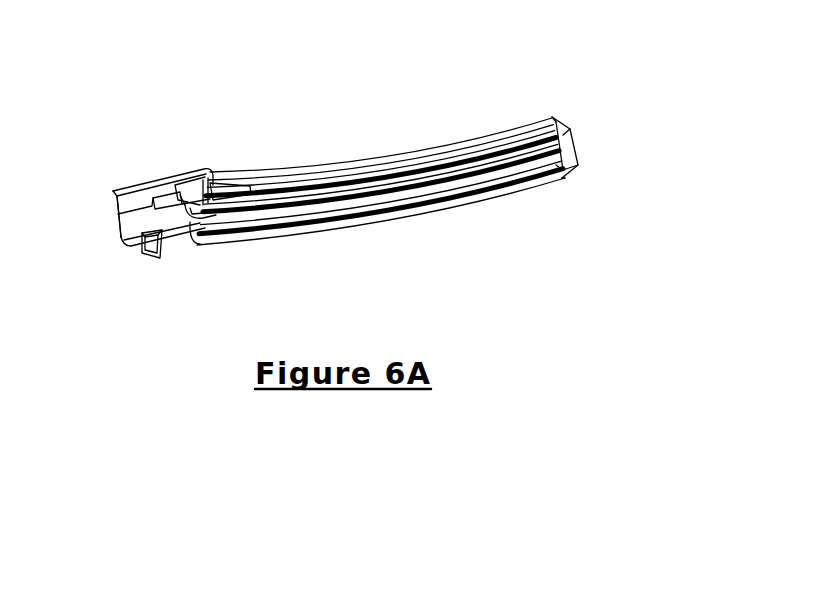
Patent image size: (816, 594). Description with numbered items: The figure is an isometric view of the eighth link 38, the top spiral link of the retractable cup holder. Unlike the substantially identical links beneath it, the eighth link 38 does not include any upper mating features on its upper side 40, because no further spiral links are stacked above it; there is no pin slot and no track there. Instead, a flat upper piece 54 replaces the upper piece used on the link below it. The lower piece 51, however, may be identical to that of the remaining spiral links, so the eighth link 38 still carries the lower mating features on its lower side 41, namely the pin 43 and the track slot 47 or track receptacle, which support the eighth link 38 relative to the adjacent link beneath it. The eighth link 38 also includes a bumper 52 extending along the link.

The eighth link 38 is at (413, 104).
The upper side 40 is at (553, 121).
The lower side 41 is at (552, 180).
The pin 43 is at (152, 262).
The track slot 47 is at (188, 226).
The lower piece 51 is at (115, 224).
The bumper 52 is at (339, 181).
The flat upper piece 54 is at (133, 197).